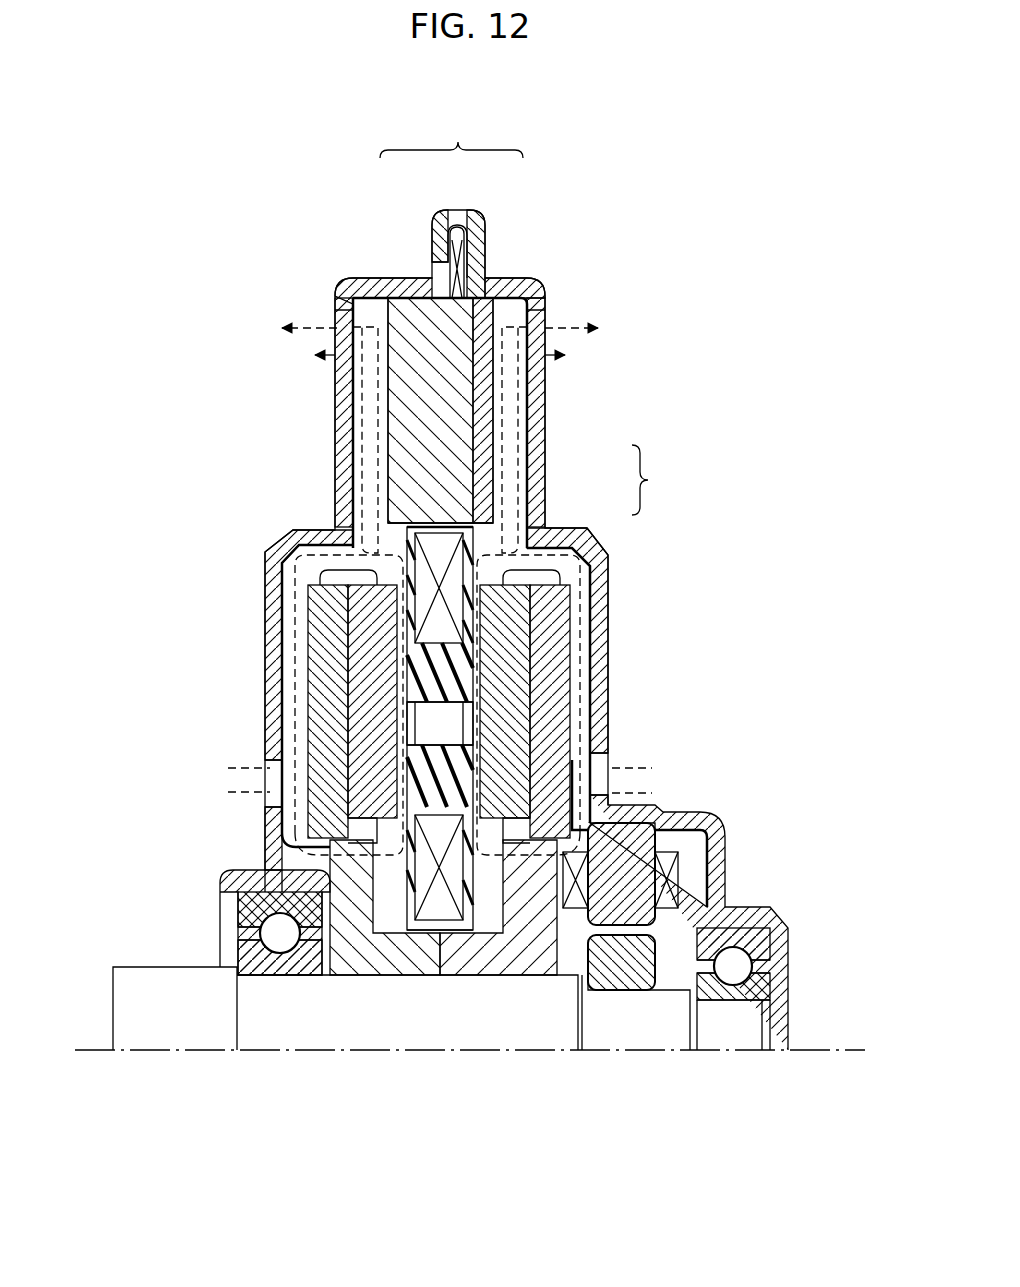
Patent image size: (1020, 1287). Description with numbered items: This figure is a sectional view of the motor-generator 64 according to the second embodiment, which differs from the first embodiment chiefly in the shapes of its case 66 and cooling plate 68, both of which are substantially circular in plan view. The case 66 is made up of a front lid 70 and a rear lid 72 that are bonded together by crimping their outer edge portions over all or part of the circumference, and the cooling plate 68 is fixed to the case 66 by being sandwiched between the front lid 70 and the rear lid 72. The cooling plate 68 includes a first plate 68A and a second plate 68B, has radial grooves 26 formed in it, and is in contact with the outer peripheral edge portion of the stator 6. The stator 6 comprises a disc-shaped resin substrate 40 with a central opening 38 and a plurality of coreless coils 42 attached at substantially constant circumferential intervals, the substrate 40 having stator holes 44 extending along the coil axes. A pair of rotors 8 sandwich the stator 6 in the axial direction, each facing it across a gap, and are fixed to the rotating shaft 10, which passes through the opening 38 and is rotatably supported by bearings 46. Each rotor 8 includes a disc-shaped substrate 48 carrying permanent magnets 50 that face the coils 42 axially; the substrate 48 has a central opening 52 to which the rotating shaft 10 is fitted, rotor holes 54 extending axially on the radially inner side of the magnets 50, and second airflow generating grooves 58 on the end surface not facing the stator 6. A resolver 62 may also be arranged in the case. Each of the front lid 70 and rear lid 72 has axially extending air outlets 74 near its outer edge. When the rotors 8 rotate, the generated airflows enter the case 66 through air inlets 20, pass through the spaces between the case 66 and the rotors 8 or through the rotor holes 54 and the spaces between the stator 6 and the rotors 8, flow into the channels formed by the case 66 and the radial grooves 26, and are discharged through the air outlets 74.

The stator 6 is at (485, 922).
The rotors 8 is at (291, 562).
The rotating shaft 10 is at (290, 1040).
The air inlets 20 is at (287, 760).
The radial grooves 26 is at (383, 448).
The opening 38 is at (467, 921).
The substrate 40 is at (410, 795).
The coreless coils 42 is at (430, 907).
The stator holes 44 is at (455, 705).
The bearings 46 is at (252, 910).
The substrate 48 is at (325, 660).
The permanent magnets 50 is at (357, 625).
The opening 52 is at (552, 980).
The rotor holes 54 is at (335, 855).
The second airflow generating grooves 58 is at (247, 683).
The resolver 62 is at (668, 850).
The motor-generator 64 is at (574, 232).
The case 66 is at (451, 134).
The cooling plate 68 is at (531, 410).
The first plate 68A is at (455, 440).
The second plate 68B is at (487, 517).
The front lid 70 is at (382, 278).
The rear lid 72 is at (514, 278).
The air outlets 74 is at (333, 318).